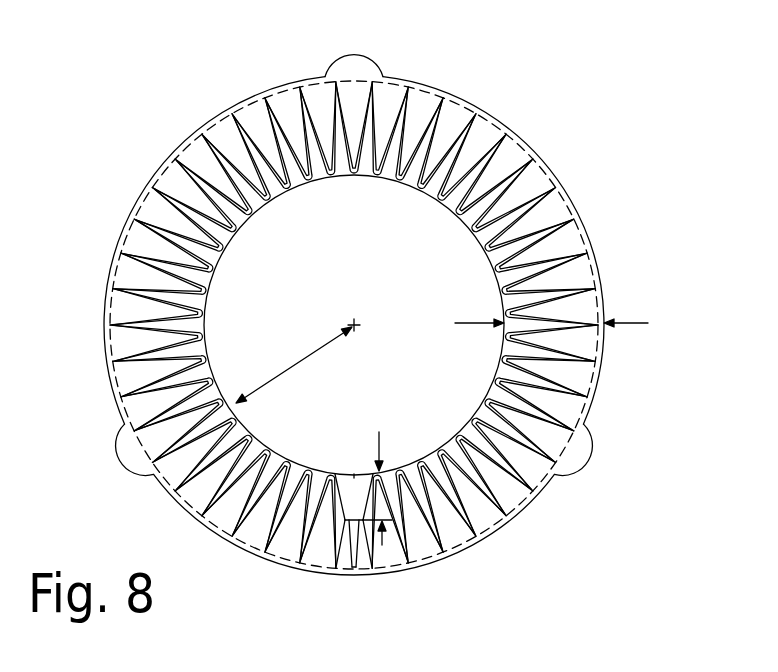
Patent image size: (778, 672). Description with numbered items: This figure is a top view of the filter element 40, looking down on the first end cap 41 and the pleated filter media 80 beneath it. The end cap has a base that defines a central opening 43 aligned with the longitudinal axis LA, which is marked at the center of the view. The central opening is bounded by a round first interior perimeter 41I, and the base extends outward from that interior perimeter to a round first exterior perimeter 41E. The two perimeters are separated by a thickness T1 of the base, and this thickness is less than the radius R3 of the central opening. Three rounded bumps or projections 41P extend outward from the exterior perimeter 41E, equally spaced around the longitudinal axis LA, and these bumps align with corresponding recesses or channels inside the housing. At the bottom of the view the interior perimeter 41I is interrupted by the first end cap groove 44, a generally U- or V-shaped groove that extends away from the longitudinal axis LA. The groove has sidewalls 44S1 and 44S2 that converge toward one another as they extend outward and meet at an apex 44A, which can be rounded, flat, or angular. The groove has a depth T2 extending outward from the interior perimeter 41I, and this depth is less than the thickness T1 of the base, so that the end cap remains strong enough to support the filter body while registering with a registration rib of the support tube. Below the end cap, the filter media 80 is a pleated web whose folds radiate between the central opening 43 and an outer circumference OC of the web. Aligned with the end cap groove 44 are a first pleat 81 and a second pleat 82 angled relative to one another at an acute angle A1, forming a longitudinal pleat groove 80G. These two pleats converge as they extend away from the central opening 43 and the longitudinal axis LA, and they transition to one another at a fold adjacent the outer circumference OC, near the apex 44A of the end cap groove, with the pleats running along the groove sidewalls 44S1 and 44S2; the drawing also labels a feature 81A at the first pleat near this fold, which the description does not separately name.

The filter element 40 is at (568, 128).
The first end cap 41 is at (172, 128).
The first exterior perimeter 41E is at (103, 316).
The first interior perimeter 41I is at (220, 254).
The bumps or projections 41P is at (372, 60).
The central opening 43 is at (344, 248).
The first end cap groove 44 is at (356, 450).
The sidewall 44S1 is at (384, 471).
The sidewall 44S2 is at (312, 480).
The apex 44A is at (350, 560).
The filter media 80 is at (557, 212).
The longitudinal pleat groove 80G is at (372, 523).
The first pleat 81 is at (362, 545).
The slit wall 81A is at (363, 565).
The second pleat 82 is at (350, 522).
The acute angle A1 is at (335, 535).
The longitudinal axis LA is at (360, 320).
The outer circumference OC is at (516, 483).
The radius R3 is at (294, 365).
The thickness T1 is at (565, 324).
The depth or thickness T2 is at (389, 476).